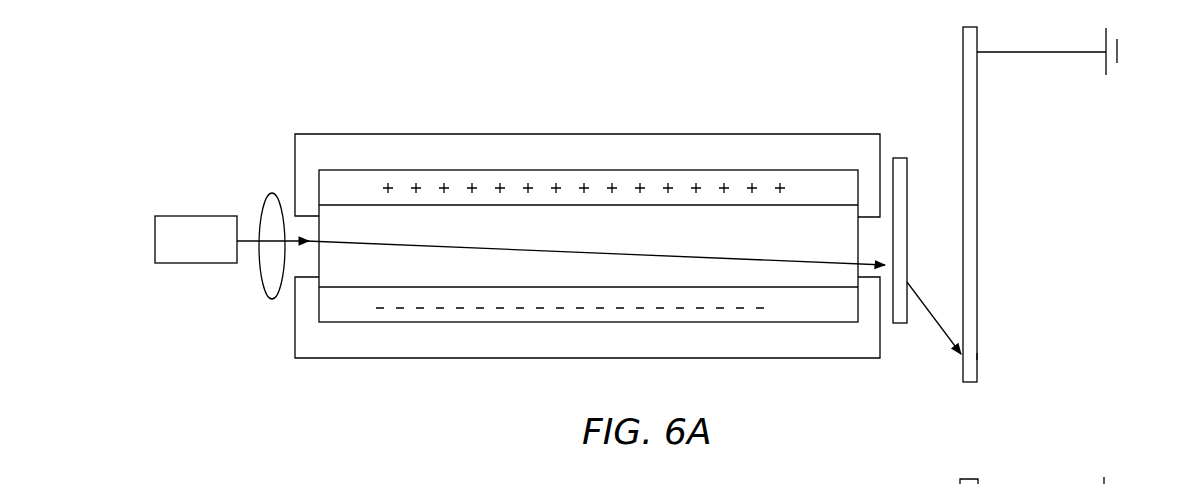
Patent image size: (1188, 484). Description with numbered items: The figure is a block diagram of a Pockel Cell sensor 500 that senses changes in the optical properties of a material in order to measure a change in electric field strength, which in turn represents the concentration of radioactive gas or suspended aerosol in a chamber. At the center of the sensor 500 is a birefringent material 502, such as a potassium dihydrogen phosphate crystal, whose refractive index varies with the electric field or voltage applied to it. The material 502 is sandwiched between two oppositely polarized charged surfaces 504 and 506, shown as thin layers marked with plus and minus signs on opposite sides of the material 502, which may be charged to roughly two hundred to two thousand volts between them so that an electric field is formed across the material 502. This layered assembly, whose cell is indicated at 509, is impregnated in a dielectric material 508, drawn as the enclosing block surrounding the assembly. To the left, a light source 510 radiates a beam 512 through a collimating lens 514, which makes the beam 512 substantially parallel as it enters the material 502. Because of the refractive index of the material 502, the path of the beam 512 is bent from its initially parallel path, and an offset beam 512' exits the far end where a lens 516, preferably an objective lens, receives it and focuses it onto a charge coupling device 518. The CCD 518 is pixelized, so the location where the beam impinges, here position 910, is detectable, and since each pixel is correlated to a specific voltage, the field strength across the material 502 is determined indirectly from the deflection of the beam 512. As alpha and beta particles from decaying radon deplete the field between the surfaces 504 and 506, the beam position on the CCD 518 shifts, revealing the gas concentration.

The Pockel Cell sensor 500 is at (237, 131).
The material 502 is at (540, 217).
The charged surface 504 is at (680, 170).
The charged surface 506 is at (630, 322).
The dielectric material 508 is at (458, 134).
The cell 509 is at (321, 205).
The light source 510 is at (170, 264).
The beam 512 is at (542, 272).
The offset beam 512' is at (913, 224).
The collimating lens 514 is at (272, 300).
The lens 516 is at (900, 323).
The charge coupling device (CCD) 518 is at (977, 213).
The position 910 is at (979, 357).